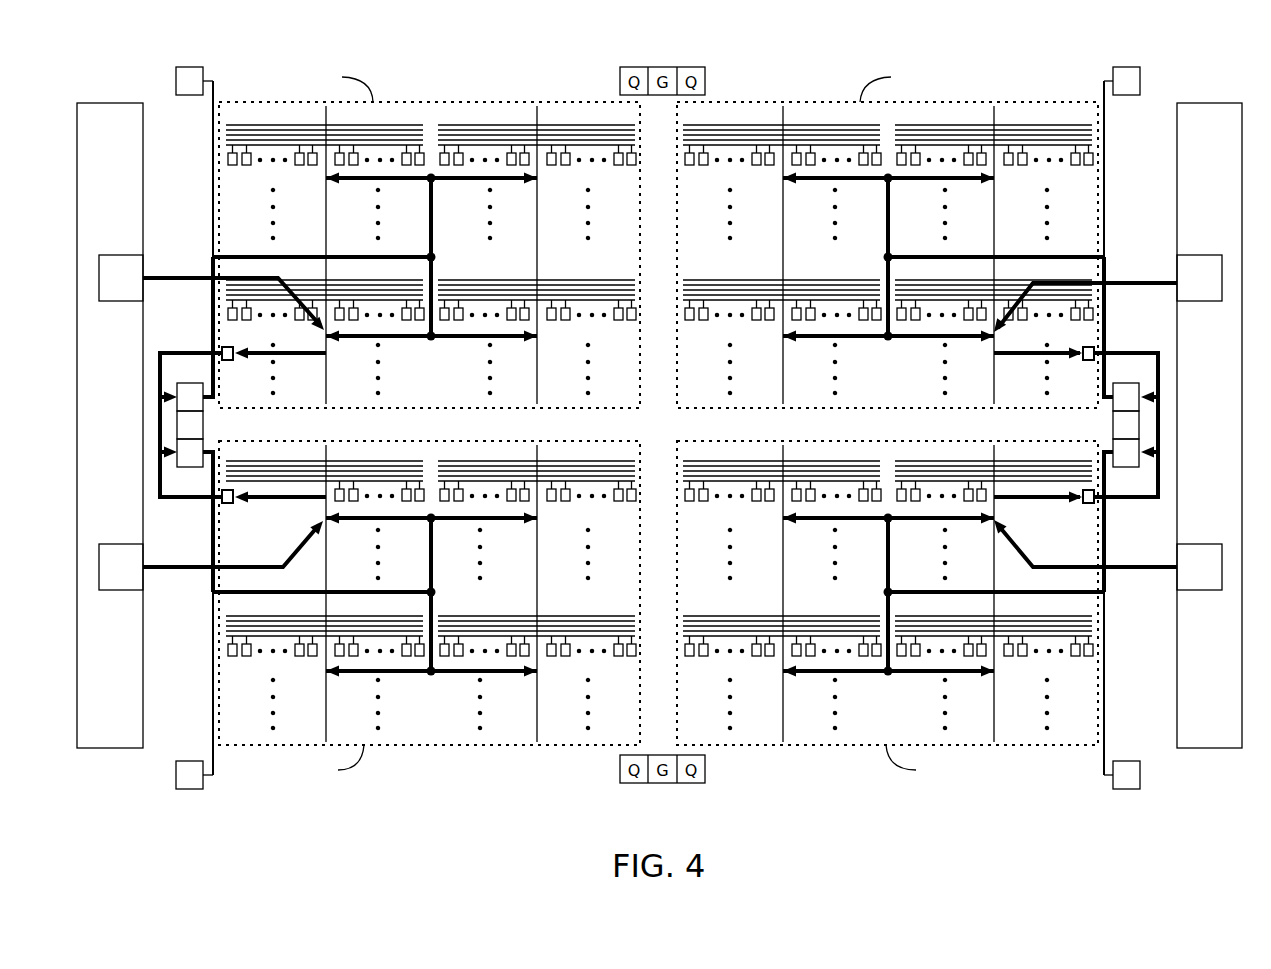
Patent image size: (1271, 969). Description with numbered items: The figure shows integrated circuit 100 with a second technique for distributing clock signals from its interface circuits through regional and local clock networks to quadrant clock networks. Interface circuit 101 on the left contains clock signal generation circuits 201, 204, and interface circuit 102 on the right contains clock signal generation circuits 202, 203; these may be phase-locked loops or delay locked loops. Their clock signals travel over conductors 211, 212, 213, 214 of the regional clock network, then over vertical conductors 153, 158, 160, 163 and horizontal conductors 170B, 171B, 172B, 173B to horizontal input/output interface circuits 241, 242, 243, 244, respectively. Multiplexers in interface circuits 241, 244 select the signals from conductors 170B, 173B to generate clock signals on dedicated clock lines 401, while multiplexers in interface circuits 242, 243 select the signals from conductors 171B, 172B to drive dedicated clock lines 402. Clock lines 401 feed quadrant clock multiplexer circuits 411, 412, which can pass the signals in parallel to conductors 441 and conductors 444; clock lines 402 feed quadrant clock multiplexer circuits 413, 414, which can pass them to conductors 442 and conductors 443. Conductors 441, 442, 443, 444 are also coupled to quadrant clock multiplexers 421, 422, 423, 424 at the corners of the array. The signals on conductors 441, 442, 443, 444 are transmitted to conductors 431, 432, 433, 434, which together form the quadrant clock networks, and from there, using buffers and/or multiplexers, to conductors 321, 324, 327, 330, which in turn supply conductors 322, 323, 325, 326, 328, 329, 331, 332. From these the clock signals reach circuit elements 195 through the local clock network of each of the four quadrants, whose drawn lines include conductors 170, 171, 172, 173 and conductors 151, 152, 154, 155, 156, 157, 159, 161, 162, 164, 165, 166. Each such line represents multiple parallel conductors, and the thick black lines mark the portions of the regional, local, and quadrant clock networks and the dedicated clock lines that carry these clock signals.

The integrated circuit 100 is at (448, 62).
The interface circuit 101 is at (108, 103).
The interface circuit 102 is at (1208, 103).
The conductors 151 is at (326, 207).
The conductors 152 is at (535, 120).
The vertical conductors 153 is at (330, 355).
The conductors 154 is at (537, 358).
The conductors 155 is at (781, 203).
The conductors 156 is at (993, 205).
The conductors 157 is at (781, 353).
The vertical conductors 158 is at (993, 350).
The conductors 159 is at (783, 542).
The vertical conductors 160 is at (993, 542).
The conductors 161 is at (785, 692).
The conductors 162 is at (993, 692).
The vertical conductors 163 is at (327, 541).
The conductors 164 is at (535, 573).
The conductors 165 is at (324, 703).
The conductors 166 is at (535, 697).
The conductors 170 is at (268, 162).
The horizontal conductors 170B is at (290, 357).
The conductors 171 is at (727, 122).
The horizontal conductors 171B is at (1012, 356).
The conductors 172 is at (722, 503).
The horizontal conductors 172B is at (1050, 500).
The conductors 173 is at (366, 460).
The horizontal conductors 173B is at (268, 500).
The circuit elements 195 is at (236, 167).
The clock signal generation circuit 201 is at (120, 254).
The clock signal generation circuit 202 is at (1200, 254).
The clock signal generation circuit 203 is at (1198, 542).
The clock signal generation circuit 204 is at (120, 543).
The conductors 211 is at (185, 277).
The conductors 212 is at (1144, 279).
The conductors 213 is at (1125, 566).
The conductors 214 is at (167, 566).
The horizontal input/output interface circuit 241 is at (232, 348).
The horizontal input/output interface circuit 242 is at (1086, 346).
The horizontal input/output interface circuit 243 is at (1087, 505).
The horizontal input/output interface circuit 244 is at (228, 506).
The conductors 321 is at (430, 205).
The conductors 322 is at (444, 180).
The conductors 323 is at (412, 340).
The conductors 324 is at (889, 204).
The conductors 325 is at (856, 182).
The conductors 326 is at (865, 340).
The conductors 327 is at (886, 538).
The conductors 328 is at (826, 520).
The conductors 329 is at (870, 676).
The conductors 330 is at (434, 537).
The conductors 331 is at (496, 521).
The conductors 332 is at (410, 676).
The dedicated clock lines 401 is at (209, 424).
The dedicated clock lines 402 is at (1111, 424).
The quadrant clock multiplexer circuits 411 is at (205, 405).
The quadrant clock multiplexer circuits 412 is at (206, 445).
The quadrant clock multiplexer circuits 413 is at (1110, 400).
The quadrant clock multiplexer circuits 414 is at (1110, 445).
The quadrant clock multiplexer 421 is at (188, 67).
The quadrant clock multiplexer 422 is at (1125, 67).
The quadrant clock multiplexer 423 is at (1125, 790).
The quadrant clock multiplexer 424 is at (188, 790).
The conductors 431 is at (360, 257).
The conductors 432 is at (1072, 256).
The conductors 433 is at (957, 591).
The conductors 434 is at (397, 591).
The conductors 441 is at (213, 256).
The conductors 442 is at (1108, 258).
The conductors 443 is at (1108, 592).
The conductors 444 is at (212, 592).